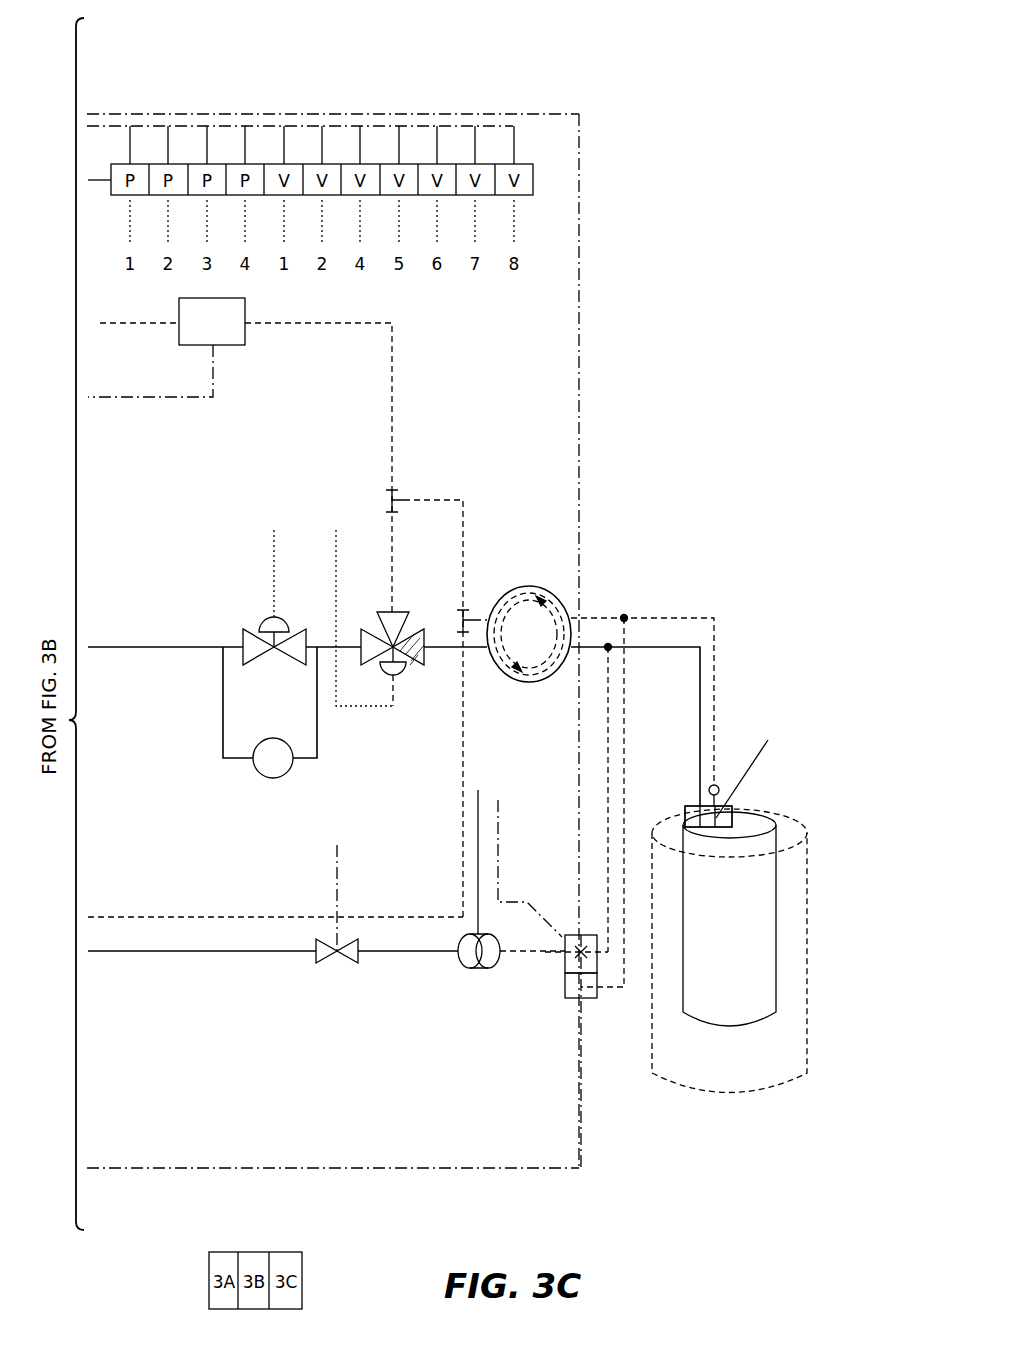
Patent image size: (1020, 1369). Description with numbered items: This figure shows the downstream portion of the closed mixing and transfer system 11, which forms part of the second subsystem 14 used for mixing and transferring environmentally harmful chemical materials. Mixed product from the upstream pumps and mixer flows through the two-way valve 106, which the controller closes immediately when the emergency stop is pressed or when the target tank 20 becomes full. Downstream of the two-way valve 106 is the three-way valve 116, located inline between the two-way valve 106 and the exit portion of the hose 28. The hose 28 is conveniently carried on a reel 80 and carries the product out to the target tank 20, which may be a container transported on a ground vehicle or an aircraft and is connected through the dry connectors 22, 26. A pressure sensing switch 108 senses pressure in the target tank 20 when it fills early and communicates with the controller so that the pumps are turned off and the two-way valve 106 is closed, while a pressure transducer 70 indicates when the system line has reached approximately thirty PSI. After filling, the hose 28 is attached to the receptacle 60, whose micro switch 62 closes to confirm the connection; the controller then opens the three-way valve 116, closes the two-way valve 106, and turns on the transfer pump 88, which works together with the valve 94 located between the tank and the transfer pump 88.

The closed system 11 is at (660, 158).
The second subsystem 14 is at (583, 276).
The pressure sensing switch 108 is at (237, 307).
The three-way valve 116 is at (403, 588).
The two-way valve 106 is at (262, 604).
The reel 80 is at (560, 576).
The hose 28 is at (634, 650).
The pressure transducer 70 is at (286, 775).
The dry connector 22 is at (742, 807).
The dry connector 26 is at (708, 816).
The target tank 20 is at (682, 1110).
The valve 94 is at (318, 957).
The transfer pump 88 is at (472, 955).
The micro switch 62 is at (590, 1000).
The receptacle 60 is at (565, 973).